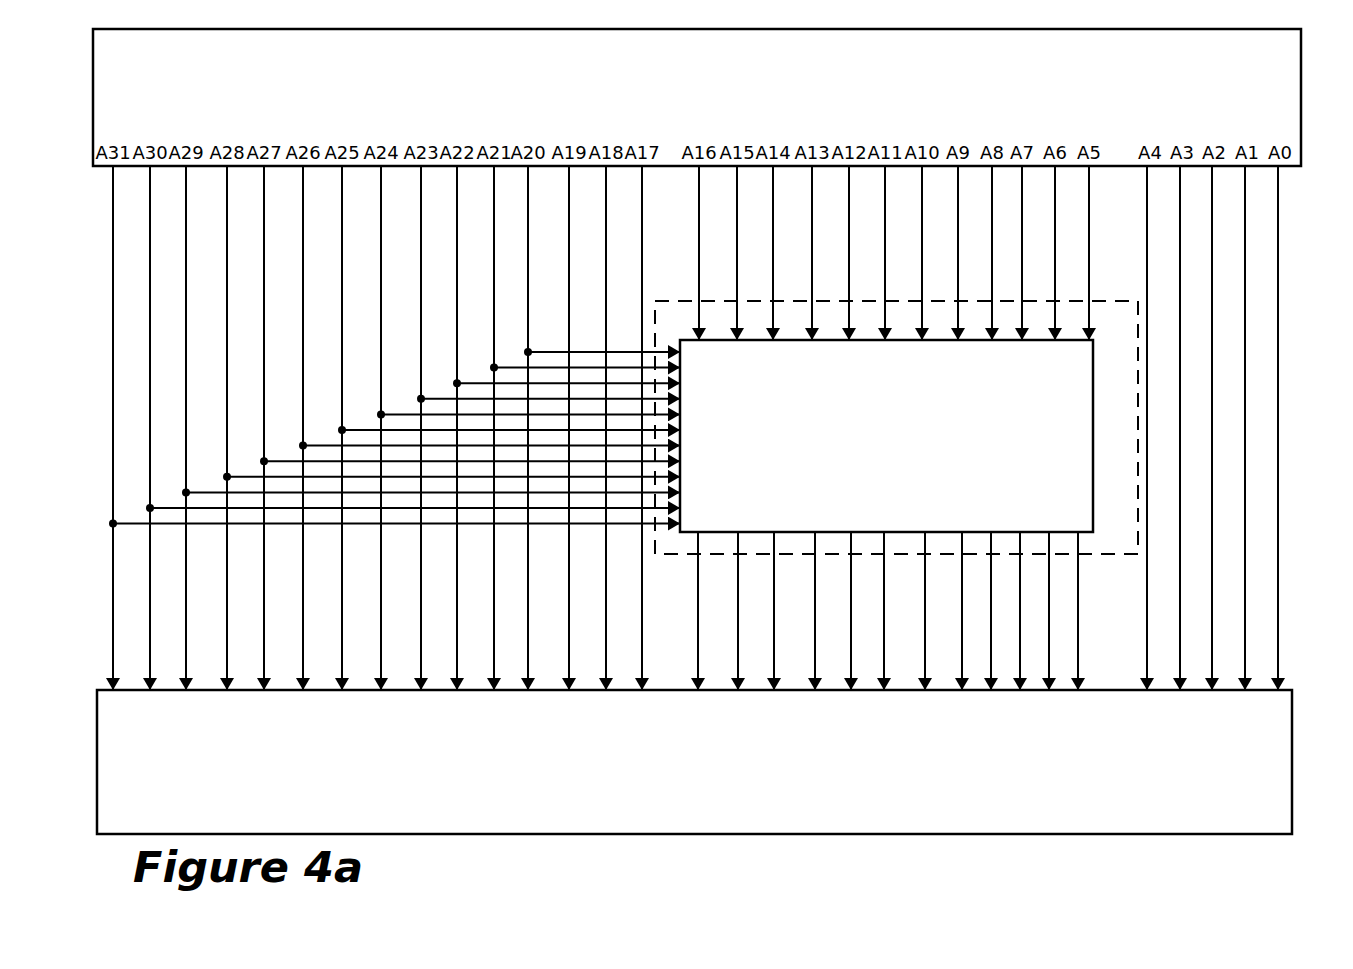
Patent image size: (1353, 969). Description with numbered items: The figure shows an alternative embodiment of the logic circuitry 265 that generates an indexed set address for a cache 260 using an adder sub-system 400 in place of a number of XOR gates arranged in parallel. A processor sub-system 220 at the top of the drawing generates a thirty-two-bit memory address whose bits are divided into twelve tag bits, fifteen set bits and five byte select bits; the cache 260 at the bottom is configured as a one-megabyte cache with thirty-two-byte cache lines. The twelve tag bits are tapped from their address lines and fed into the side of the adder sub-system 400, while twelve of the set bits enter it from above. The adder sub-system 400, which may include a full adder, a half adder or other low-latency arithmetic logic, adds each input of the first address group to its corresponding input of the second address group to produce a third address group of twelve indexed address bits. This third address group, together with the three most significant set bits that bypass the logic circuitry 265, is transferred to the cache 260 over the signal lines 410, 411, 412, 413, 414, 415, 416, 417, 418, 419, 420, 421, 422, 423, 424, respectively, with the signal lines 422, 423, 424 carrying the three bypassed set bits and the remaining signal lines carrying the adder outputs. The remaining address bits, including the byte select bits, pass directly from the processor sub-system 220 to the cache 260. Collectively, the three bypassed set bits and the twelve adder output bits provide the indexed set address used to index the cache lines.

The processor sub-system 220 is at (1303, 97).
The cache 260 is at (1292, 745).
The logic circuitry 265 is at (1094, 301).
The adder sub-system 400 is at (1093, 418).
The signal line 410 is at (1078, 570).
The signal line 411 is at (1049, 570).
The signal line 412 is at (1020, 570).
The signal line 413 is at (991, 570).
The signal line 414 is at (962, 570).
The signal line 415 is at (925, 570).
The signal line 416 is at (884, 570).
The signal line 417 is at (851, 570).
The signal line 418 is at (815, 570).
The signal line 419 is at (774, 570).
The signal line 420 is at (738, 570).
The signal line 421 is at (698, 570).
The signal line 422 is at (642, 570).
The signal line 423 is at (606, 570).
The signal line 424 is at (569, 570).